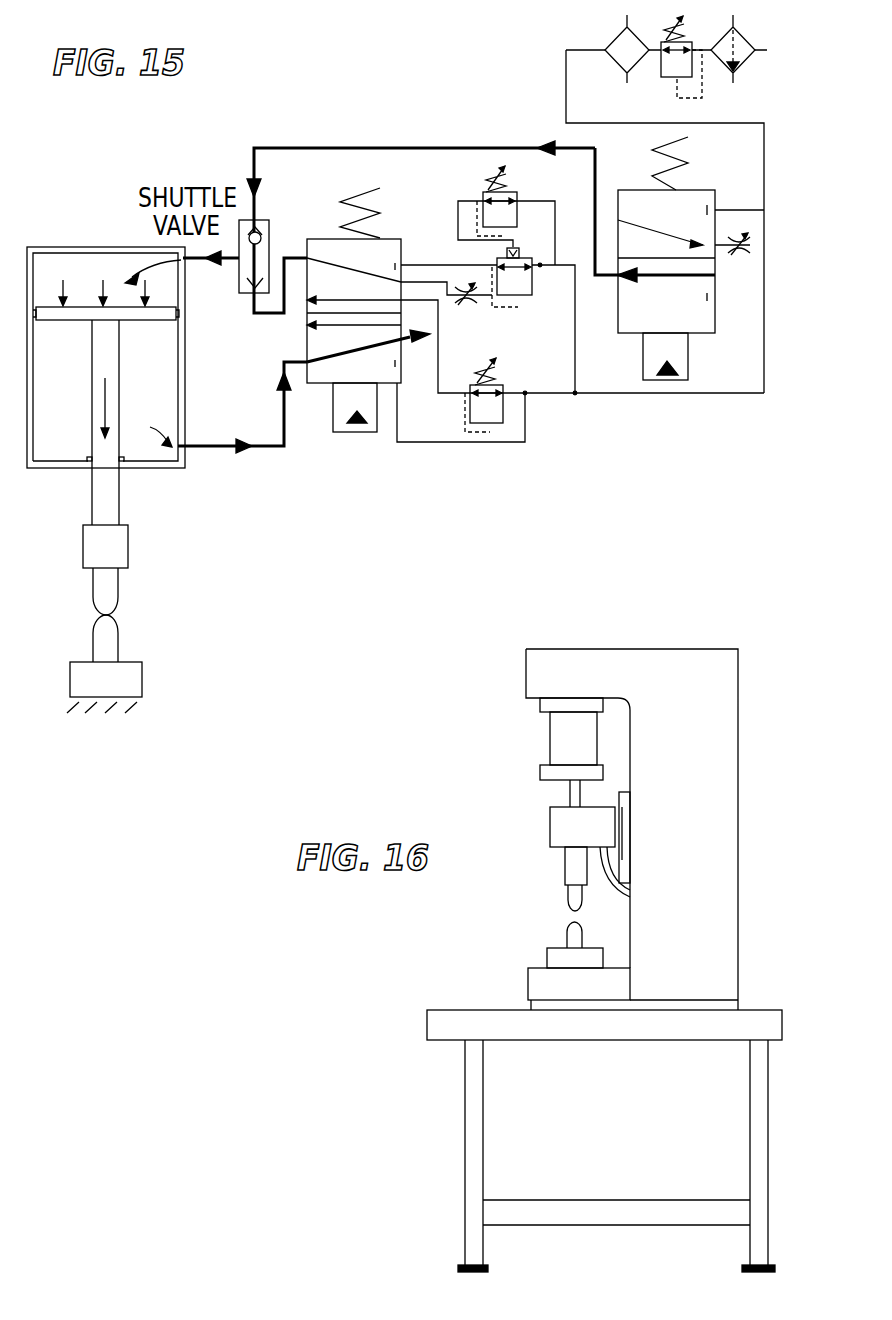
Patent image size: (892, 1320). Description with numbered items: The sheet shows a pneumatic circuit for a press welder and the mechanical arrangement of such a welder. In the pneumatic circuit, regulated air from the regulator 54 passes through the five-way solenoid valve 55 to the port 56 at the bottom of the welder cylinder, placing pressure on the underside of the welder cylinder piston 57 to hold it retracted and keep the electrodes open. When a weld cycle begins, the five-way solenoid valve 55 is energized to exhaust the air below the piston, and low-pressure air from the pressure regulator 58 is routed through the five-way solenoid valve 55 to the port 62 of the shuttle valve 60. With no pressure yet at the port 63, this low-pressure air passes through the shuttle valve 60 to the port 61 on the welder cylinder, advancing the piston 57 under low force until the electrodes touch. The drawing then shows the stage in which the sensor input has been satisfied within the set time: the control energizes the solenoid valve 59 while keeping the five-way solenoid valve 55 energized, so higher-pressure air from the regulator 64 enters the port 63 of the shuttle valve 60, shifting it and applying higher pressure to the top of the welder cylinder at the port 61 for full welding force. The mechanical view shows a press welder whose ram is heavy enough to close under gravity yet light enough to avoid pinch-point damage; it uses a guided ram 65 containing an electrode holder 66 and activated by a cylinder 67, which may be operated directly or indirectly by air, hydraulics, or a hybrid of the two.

In FIG. 15, the regulator 54 is at (498, 385).
In FIG. 15, the 5-way solenoid valve 55 is at (330, 385).
In FIG. 15, the port of the welder cylinder 56 is at (188, 444).
In FIG. 15, the welder cylinder piston 57 is at (80, 306).
In FIG. 15, the pressure regulator 58 is at (533, 285).
In FIG. 15, the solenoid valve 59 is at (701, 190).
In FIG. 15, the shuttle valve 60 is at (272, 243).
In FIG. 15, the port on the welder cylinder 61 is at (186, 262).
In FIG. 15, the port on shuttle valve 62 is at (253, 296).
In FIG. 15, the port of the shuttle valve 63 is at (262, 222).
In FIG. 15, the regulator 64 is at (668, 78).
In FIG. 16, the guided ram 65 is at (619, 822).
In FIG. 16, the electrode holder 66 is at (565, 860).
In FIG. 16, the cylinder 67 is at (550, 745).